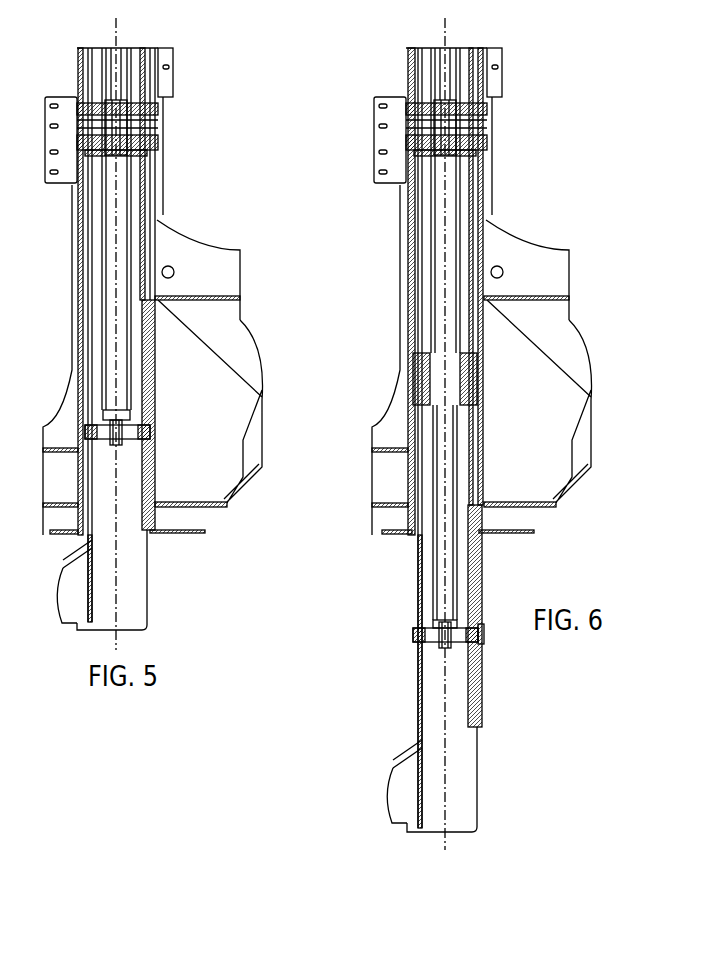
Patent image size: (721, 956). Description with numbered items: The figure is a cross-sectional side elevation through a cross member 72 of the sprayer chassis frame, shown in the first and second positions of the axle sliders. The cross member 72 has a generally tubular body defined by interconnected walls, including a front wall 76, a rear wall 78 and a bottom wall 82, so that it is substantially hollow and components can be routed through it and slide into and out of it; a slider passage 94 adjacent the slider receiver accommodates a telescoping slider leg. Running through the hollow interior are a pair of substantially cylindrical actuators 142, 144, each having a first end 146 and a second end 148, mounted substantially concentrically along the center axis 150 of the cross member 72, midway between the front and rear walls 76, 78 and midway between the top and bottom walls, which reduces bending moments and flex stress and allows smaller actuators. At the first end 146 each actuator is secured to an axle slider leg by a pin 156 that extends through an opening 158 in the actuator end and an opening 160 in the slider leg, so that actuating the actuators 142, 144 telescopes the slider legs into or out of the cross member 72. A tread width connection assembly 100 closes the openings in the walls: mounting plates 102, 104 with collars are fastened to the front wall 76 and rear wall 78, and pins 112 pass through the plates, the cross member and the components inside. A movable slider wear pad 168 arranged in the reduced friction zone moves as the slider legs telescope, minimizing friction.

In FIG. 5, the first cross member 72 is at (78, 354).
In FIG. 6, the first cross member 72 is at (392, 348).
In FIG. 5, the front wall 76 is at (80, 303).
In FIG. 6, the front wall 76 is at (407, 300).
In FIG. 5, the rear wall 78 is at (153, 328).
In FIG. 6, the rear wall 78 is at (483, 218).
In FIG. 5, the bottom wall 82 is at (137, 223).
In FIG. 6, the bottom wall 82 is at (470, 198).
In FIG. 6, the slider passage 94 is at (470, 325).
In FIG. 5, the tread width connection assembly 100 is at (180, 133).
In FIG. 6, the tread width connection assembly 100 is at (512, 103).
In FIG. 5, the third mounting plate 102 is at (74, 93).
In FIG. 6, the third mounting plate 102 is at (404, 93).
In FIG. 5, the fourth mounting plate 104 is at (160, 90).
In FIG. 6, the fourth mounting plate 104 is at (489, 92).
In FIG. 5, the pin 112 is at (150, 138).
In FIG. 6, the pin 112 is at (478, 113).
In FIG. 5, the third actuator 142 is at (111, 288).
In FIG. 6, the third actuator 142 is at (440, 232).
In FIG. 5, the fourth actuator 144 is at (108, 76).
In FIG. 6, the fourth actuator 144 is at (439, 77).
In FIG. 5, the first end 146 is at (103, 430).
In FIG. 6, the first end 146 is at (415, 632).
In FIG. 5, the second end 148 is at (98, 152).
In FIG. 6, the second end 148 is at (430, 152).
In FIG. 5, the center axis 150 is at (116, 42).
In FIG. 6, the center axis 150 is at (446, 42).
In FIG. 5, the pin 156 is at (147, 431).
In FIG. 6, the pin 156 is at (472, 636).
In FIG. 6, the opening 158 is at (445, 645).
In FIG. 6, the opening 160 is at (484, 625).
In FIG. 5, the movable slider wear pad 168 is at (157, 380).
In FIG. 6, the movable slider wear pad 168 is at (480, 583).